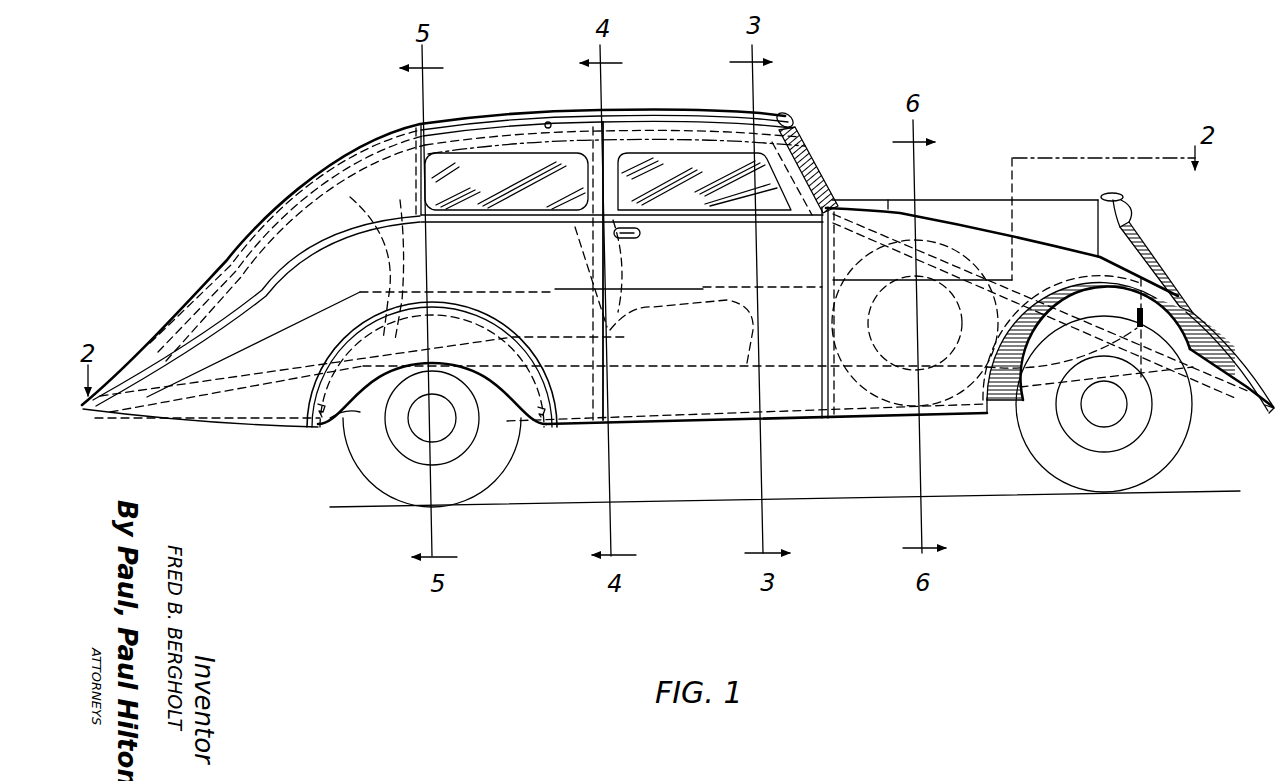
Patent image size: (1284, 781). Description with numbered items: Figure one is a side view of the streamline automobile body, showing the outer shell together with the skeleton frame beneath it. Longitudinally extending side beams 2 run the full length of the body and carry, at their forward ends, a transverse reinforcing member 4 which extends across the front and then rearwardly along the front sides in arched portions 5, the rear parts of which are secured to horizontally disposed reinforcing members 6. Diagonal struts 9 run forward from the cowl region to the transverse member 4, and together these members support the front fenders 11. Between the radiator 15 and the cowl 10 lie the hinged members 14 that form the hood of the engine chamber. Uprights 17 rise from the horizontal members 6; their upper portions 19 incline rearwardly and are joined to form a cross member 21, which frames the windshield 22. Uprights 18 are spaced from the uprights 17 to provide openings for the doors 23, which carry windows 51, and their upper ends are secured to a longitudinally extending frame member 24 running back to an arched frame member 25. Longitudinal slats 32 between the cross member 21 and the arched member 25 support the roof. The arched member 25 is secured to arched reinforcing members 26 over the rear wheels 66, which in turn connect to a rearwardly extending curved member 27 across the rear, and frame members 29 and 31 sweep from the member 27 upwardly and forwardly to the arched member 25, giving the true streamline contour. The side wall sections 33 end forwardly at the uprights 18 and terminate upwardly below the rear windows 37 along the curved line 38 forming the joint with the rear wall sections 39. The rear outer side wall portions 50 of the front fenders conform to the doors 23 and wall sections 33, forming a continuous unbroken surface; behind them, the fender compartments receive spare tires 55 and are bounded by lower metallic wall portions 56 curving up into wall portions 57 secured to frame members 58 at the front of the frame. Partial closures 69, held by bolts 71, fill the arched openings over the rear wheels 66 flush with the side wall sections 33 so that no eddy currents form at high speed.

The side beams 2 is at (732, 412).
The transverse reinforcing member 4 is at (1269, 414).
The arched portions 5 is at (1193, 320).
The horizontal reinforcing members 6 is at (656, 417).
The diagonal struts 9 is at (1026, 298).
The cowl 10 is at (849, 204).
The front fenders 11 is at (1214, 321).
The hinged members 14 is at (974, 204).
The radiator 15 is at (1123, 208).
The uprights 17 is at (826, 253).
The uprights 18 is at (592, 256).
The upper portions 19 is at (803, 200).
The cross member 21 is at (787, 112).
The windshield 22 is at (803, 150).
The doors 23 is at (712, 393).
The longitudinally extending frame member 24 is at (627, 132).
The arched frame member 25 is at (409, 180).
The arched reinforcing members 26 is at (462, 298).
The curved member 27 is at (232, 414).
The frame member 29 is at (300, 186).
The frame member 31 is at (256, 223).
The slats 32 is at (549, 121).
The side wall sections 33 is at (571, 338).
The rear windows 37 is at (495, 168).
The curved line 38 is at (258, 296).
The rear wall sections 39 is at (250, 270).
The rear outer side wall portions 50 is at (851, 347).
The windows 51 is at (673, 175).
The spare tires 55 is at (931, 234).
The lower metallic wall portions 56 is at (962, 404).
The wall portions 57 is at (1063, 297).
The frame members 58 is at (1150, 310).
The rear wheels 66 is at (398, 487).
The partial closures 69 is at (337, 413).
The bolts 71 is at (419, 326).